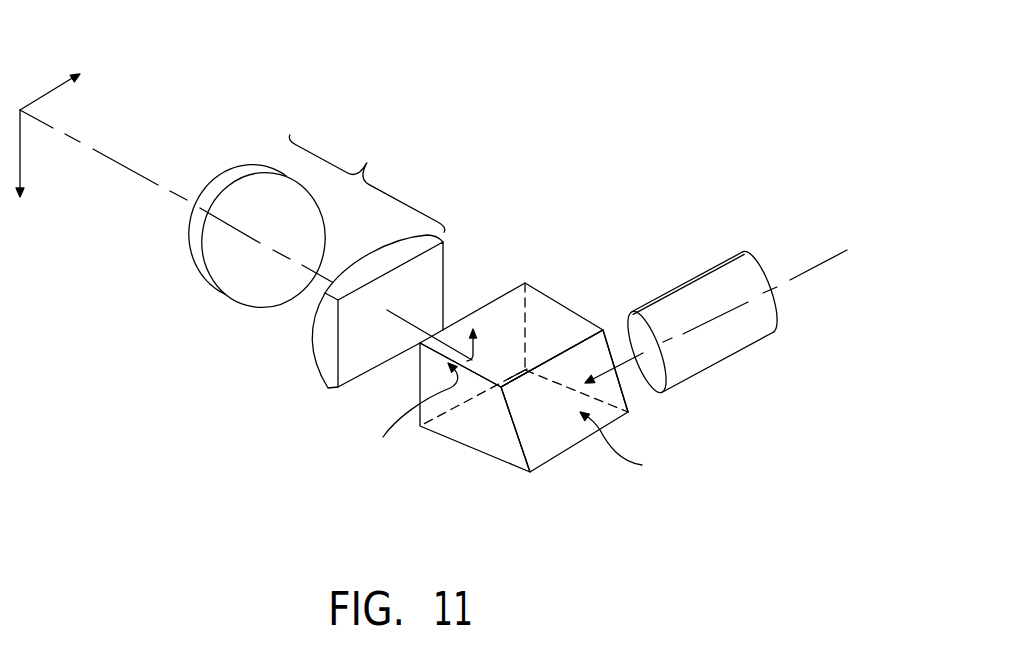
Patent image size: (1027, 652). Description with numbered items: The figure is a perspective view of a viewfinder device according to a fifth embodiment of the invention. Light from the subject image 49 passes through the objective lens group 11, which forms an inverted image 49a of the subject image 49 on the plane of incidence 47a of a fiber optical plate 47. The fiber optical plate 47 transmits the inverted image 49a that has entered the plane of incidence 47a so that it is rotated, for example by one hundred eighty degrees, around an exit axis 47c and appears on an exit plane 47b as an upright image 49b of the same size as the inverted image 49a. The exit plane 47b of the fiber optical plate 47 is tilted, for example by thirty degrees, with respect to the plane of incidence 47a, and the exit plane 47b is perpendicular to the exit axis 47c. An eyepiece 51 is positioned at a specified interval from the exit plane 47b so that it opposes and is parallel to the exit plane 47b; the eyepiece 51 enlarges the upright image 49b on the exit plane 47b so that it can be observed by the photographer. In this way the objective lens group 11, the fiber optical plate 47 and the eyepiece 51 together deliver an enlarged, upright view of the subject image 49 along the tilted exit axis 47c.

The subject image 49 is at (50, 90).
The objective lens group 11 is at (317, 260).
The fiber optical plate 47 is at (523, 365).
The plane of incidence 47a is at (502, 323).
The exit plane 47b is at (542, 448).
The exit axis 47c is at (577, 398).
The inverted image 49a is at (407, 400).
The upright image 49b is at (639, 450).
The eyepiece 51 is at (715, 347).